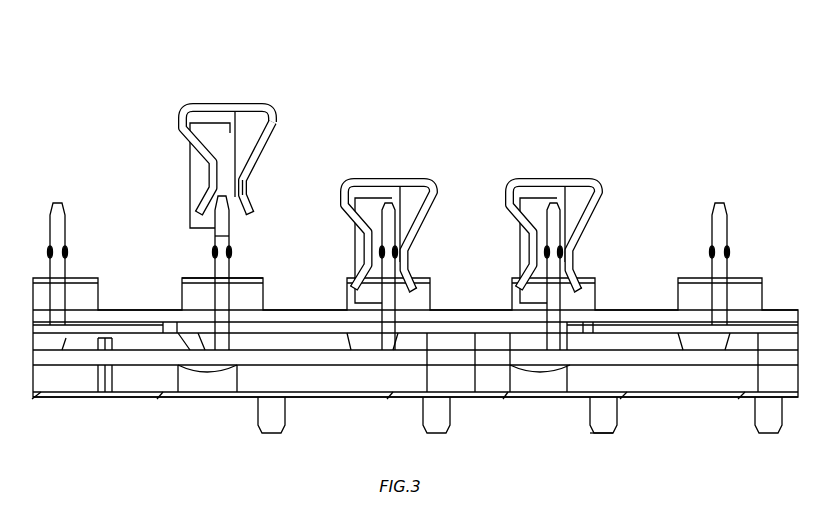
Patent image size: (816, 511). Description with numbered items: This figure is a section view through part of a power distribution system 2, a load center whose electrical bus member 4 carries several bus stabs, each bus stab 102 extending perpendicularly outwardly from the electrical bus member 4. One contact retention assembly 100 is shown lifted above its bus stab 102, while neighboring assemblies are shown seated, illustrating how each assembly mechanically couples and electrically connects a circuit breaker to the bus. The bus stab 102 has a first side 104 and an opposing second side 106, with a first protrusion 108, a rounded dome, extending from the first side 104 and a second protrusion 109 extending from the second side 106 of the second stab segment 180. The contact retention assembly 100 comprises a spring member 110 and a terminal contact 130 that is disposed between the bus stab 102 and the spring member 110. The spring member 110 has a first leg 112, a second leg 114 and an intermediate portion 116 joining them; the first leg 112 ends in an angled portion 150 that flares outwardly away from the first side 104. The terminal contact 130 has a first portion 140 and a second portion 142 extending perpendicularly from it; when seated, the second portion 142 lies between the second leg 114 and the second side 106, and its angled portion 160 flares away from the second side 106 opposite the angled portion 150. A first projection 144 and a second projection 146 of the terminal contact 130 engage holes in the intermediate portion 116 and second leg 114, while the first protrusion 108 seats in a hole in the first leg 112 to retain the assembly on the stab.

The contact retention assembly 100 is at (112, 72).
The bus stab 102 is at (227, 312).
The first side 104 is at (215, 294).
The second side 106 is at (243, 278).
The first protrusion 108 is at (199, 252).
The second protrusion 109 is at (245, 250).
The spring member 110 is at (283, 103).
The first leg 112 is at (210, 170).
The second leg 114 is at (244, 187).
The intermediate portion 116 is at (202, 103).
The terminal contact 130 is at (172, 153).
The first portion 140 is at (190, 150).
The second portion 142 is at (233, 138).
The first projection 144 is at (240, 107).
The second projection 146 is at (247, 170).
The angled portion 150 is at (200, 207).
The angled portion 160 is at (238, 213).
The second stab segment 180 is at (203, 235).
The power distribution system 2 is at (645, 427).
The electrical bus member 4 is at (147, 372).